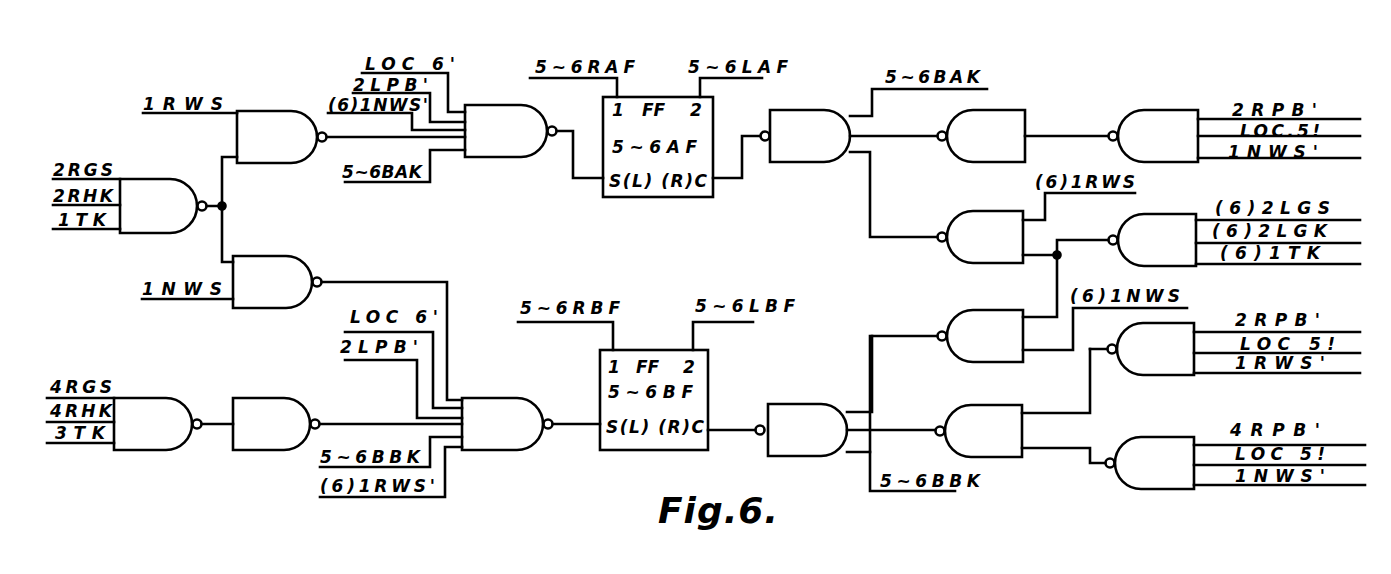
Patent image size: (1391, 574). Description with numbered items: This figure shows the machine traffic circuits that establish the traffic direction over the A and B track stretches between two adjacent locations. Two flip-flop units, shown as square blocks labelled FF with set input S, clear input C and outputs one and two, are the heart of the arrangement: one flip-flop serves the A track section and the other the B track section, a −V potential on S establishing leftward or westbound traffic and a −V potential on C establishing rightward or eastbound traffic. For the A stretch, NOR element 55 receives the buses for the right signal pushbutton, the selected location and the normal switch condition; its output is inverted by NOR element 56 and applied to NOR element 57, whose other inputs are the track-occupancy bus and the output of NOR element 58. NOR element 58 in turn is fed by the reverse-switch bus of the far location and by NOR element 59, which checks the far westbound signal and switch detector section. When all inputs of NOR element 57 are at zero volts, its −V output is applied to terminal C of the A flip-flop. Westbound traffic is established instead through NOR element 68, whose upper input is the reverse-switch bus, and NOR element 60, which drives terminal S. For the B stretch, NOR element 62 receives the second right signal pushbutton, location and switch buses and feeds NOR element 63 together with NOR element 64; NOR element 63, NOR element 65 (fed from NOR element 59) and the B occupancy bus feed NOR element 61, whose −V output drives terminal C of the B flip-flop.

The NOR element 55 is at (1235, 136).
The NOR element 56 is at (982, 136).
The NOR element 57 is at (806, 136).
The NOR element 58 is at (1037, 228).
The NOR element 59 is at (1235, 240).
The NOR element 60 is at (442, 127).
The NOR element 61 is at (802, 430).
The NOR element 62 is at (1236, 463).
The NOR element 63 is at (1021, 434).
The NOR element 64 is at (1225, 349).
The NOR element 65 is at (1063, 335).
The NOR element 68 is at (235, 137).